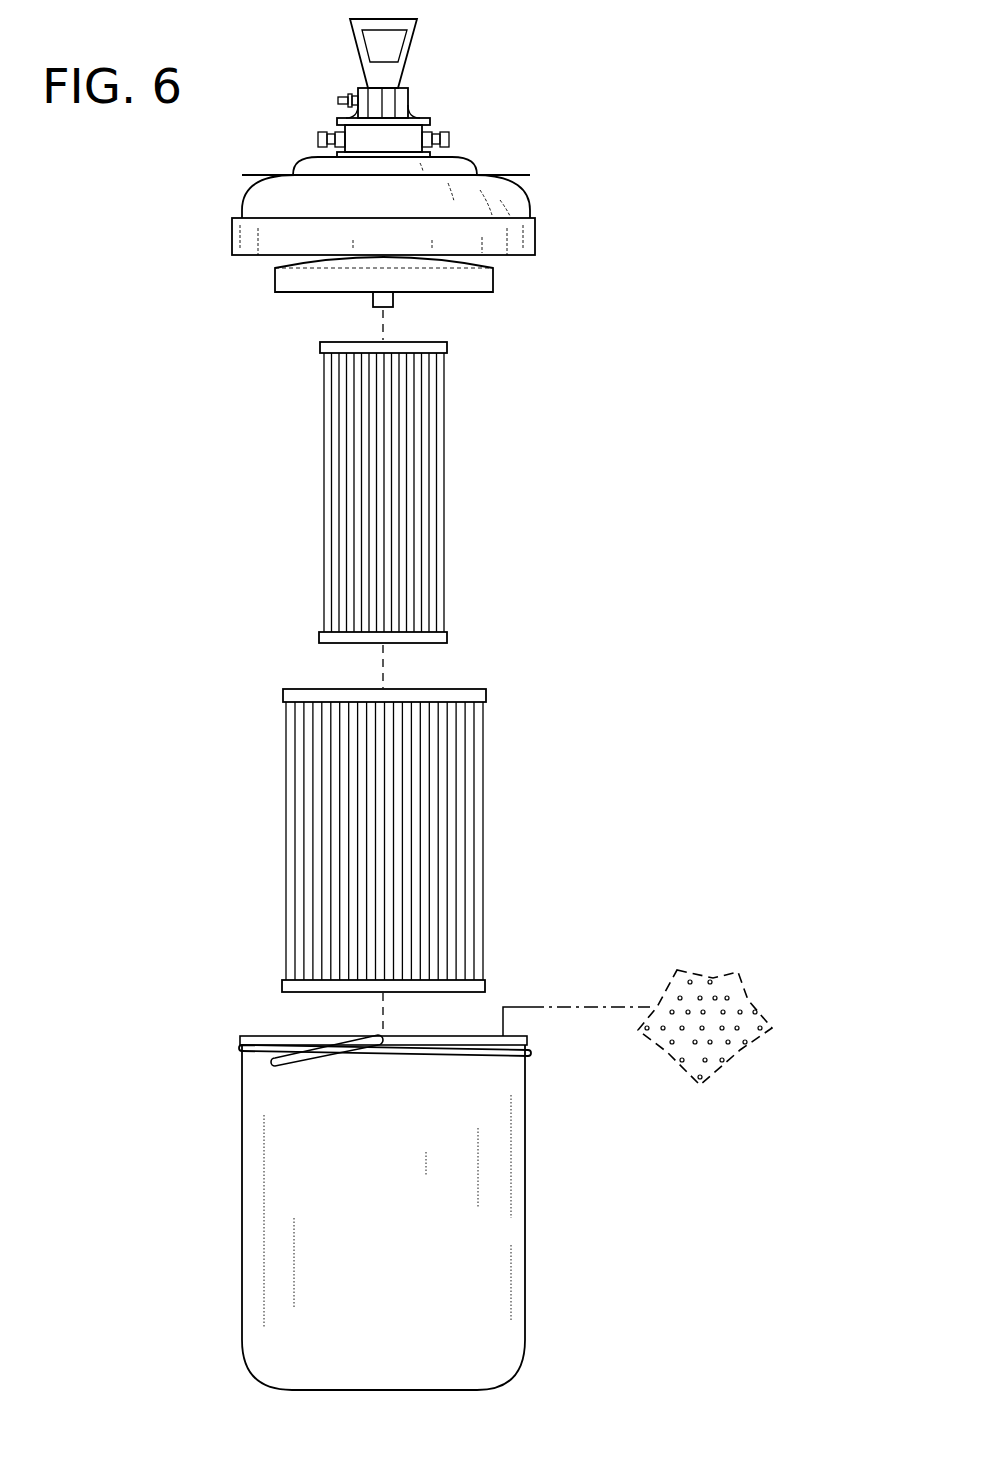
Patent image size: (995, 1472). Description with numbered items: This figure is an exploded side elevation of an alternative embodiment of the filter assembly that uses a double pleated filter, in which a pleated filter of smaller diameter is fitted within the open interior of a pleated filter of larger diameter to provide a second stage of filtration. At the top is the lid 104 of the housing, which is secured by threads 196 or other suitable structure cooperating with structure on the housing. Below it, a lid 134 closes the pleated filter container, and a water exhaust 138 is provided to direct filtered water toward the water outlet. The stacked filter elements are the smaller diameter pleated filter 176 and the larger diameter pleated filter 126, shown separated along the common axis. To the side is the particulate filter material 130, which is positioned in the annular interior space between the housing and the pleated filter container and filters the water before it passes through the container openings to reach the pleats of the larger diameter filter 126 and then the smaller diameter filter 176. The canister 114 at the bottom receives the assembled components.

The lid 104 is at (497, 198).
The lid 134 is at (485, 285).
The water exhaust 138 is at (393, 297).
The smaller diameter pleated filter 176 is at (425, 521).
The larger diameter pleated filter 126 is at (445, 800).
The particulate filter material 130 is at (737, 1007).
The threads 196 is at (265, 1045).
The canister 114 is at (480, 1238).